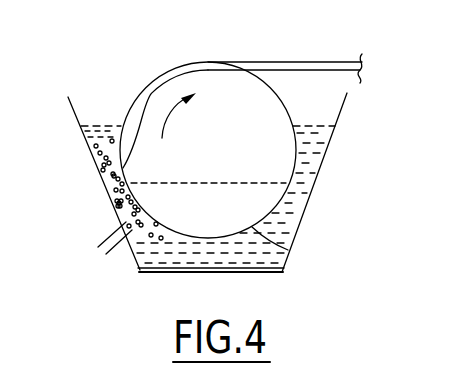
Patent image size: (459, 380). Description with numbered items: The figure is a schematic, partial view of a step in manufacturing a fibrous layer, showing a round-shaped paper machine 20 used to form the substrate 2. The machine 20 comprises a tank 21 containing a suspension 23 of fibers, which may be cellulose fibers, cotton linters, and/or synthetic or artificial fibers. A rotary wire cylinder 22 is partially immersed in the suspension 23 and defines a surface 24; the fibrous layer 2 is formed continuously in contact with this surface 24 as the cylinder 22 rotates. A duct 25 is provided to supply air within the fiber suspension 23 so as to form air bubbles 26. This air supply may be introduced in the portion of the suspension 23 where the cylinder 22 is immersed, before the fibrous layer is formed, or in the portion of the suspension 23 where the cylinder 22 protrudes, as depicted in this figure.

The substrate 2 is at (140, 91).
The round-shaped paper machine 20 is at (345, 141).
The tank 21 is at (260, 272).
The rotary wire cylinder 22 is at (288, 250).
The suspension of fibers 23 is at (307, 175).
The surface 24 is at (122, 167).
The duct 25 is at (117, 253).
The air bubbles 26 is at (95, 164).